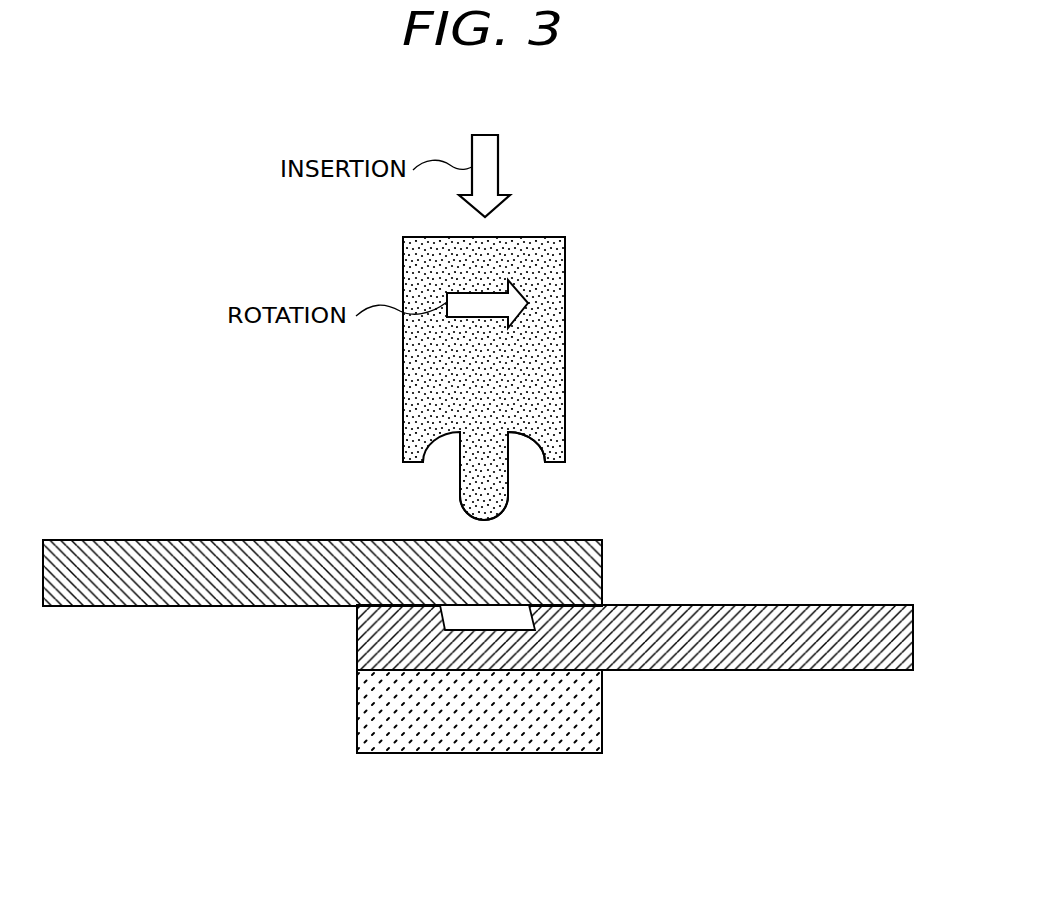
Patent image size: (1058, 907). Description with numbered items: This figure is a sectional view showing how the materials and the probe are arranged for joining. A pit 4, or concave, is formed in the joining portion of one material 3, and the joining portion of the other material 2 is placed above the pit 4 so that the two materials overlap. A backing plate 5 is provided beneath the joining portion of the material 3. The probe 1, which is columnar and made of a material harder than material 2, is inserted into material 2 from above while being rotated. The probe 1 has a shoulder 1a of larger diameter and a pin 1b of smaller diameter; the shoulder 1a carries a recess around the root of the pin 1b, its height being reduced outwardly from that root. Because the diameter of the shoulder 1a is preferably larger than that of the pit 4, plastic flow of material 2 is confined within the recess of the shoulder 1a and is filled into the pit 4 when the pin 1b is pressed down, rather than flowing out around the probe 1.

The probe 1 is at (532, 345).
The shoulder 1a is at (552, 441).
The pin 1b is at (498, 496).
The material 2 is at (108, 552).
The material 3 is at (798, 652).
The pit 4 is at (453, 620).
The backing plate 5 is at (545, 725).